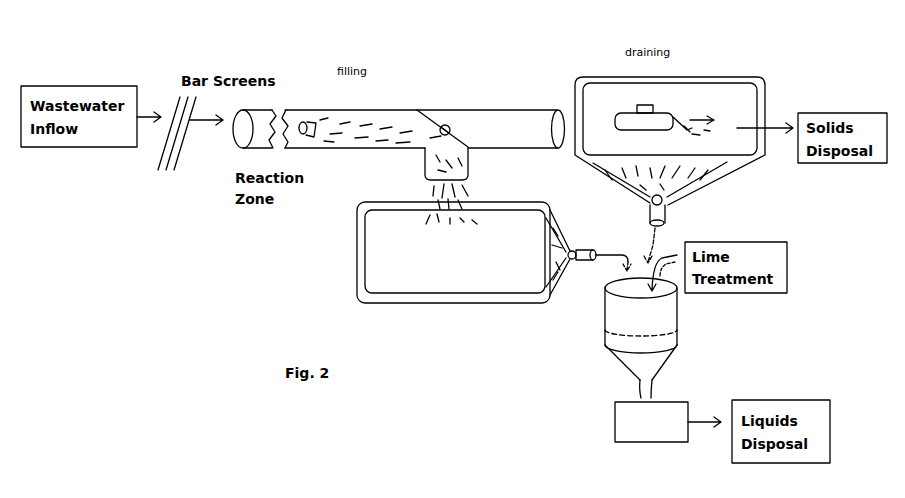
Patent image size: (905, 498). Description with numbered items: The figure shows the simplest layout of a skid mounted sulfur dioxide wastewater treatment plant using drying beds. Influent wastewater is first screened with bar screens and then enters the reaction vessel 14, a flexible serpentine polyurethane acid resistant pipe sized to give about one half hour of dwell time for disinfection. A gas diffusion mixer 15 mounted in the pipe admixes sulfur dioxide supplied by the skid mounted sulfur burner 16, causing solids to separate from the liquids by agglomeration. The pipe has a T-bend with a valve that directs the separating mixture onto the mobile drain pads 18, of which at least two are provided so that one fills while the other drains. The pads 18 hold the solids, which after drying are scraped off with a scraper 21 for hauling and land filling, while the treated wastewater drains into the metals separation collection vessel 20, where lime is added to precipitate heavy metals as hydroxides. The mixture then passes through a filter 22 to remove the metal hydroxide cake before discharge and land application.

The reaction vessel 14 is at (487, 117).
The gas diffusion mixer 15 is at (313, 138).
The sulfur burner 16 is at (312, 96).
The mobile drain pads 18 is at (360, 255).
The metals separation collection vessel 20 is at (667, 317).
The scraper 21 is at (658, 120).
The filter 22 is at (615, 430).